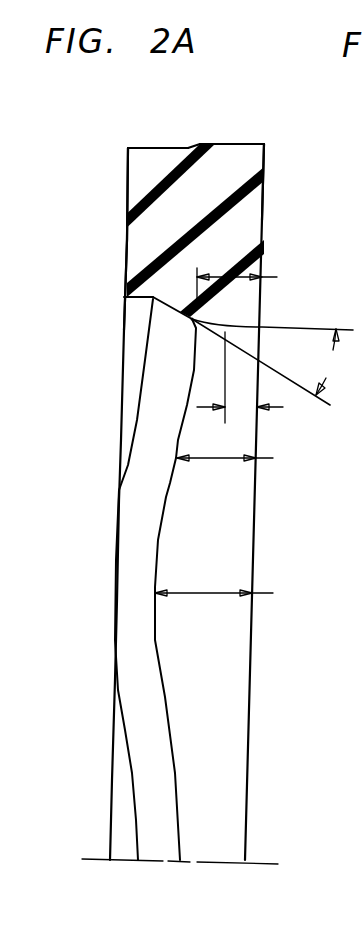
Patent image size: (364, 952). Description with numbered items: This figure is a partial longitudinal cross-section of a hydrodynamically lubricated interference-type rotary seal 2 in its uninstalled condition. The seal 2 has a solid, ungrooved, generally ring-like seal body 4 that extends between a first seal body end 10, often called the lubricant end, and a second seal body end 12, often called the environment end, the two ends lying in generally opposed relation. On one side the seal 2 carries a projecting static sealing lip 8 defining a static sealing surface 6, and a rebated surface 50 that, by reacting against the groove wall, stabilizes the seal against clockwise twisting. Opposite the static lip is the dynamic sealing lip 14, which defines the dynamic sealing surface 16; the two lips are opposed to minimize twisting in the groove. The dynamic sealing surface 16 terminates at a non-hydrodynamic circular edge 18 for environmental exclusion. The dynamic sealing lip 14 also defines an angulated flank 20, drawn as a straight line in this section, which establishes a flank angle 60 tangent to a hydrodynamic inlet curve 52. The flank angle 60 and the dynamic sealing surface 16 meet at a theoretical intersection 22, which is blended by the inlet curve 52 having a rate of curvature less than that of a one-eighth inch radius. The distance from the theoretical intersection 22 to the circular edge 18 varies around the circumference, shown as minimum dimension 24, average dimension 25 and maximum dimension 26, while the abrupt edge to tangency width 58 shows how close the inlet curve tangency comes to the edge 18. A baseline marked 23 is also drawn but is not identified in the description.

The hydrodynamically lubricated interference-type rotary seal 2 is at (90, 178).
The seal body 4 is at (195, 232).
The static sealing surface 6 is at (248, 146).
The static sealing lip 8 is at (240, 150).
The first seal body end 10 is at (127, 240).
The second seal body end 12 is at (264, 234).
The dynamic sealing lip 14 is at (238, 305).
The dynamic sealing surface 16 is at (220, 523).
The non-hydrodynamic circular edge 18 is at (264, 325).
The angulated flank 20 is at (153, 300).
The theoretical intersection 22 is at (163, 483).
The base line 23 is at (223, 863).
The minimum dimension 24 is at (251, 284).
The average dimension 25 is at (238, 461).
The maximum dimension 26 is at (226, 598).
The rebated surface 50 is at (140, 147).
The hydrodynamic inlet curve 52 is at (192, 319).
The abrupt edge to tangency width 58 is at (240, 377).
The flank angle 60 is at (267, 362).